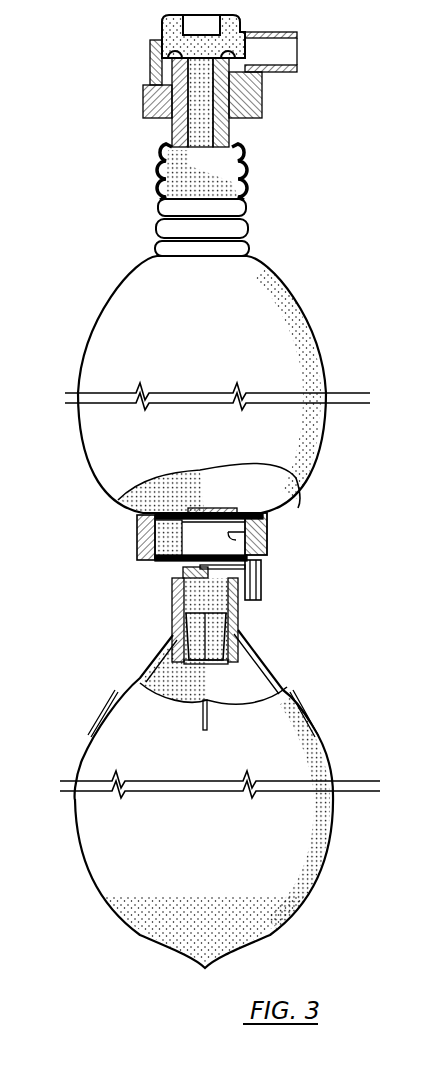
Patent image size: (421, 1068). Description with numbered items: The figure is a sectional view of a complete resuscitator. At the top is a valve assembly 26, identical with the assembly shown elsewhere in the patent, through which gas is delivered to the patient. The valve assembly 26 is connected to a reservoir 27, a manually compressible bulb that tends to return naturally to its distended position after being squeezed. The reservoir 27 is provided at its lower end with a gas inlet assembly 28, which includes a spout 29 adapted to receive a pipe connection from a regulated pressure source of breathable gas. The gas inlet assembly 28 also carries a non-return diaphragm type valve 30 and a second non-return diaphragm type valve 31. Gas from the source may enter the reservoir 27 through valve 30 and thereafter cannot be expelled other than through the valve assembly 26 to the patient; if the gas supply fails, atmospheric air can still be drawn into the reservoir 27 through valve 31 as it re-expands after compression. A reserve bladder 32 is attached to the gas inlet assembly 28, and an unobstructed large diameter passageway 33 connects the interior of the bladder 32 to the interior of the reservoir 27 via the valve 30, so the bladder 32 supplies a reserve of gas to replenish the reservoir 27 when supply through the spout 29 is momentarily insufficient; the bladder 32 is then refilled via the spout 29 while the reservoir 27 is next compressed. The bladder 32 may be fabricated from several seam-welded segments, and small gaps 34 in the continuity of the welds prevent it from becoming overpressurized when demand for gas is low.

The valve assembly 26 is at (126, 94).
The reservoir 27 is at (134, 316).
The gas inlet assembly 28 is at (124, 550).
The spout 29 is at (255, 585).
The non-return diaphragm type valve 30 is at (267, 529).
The non-return diaphragm type valve 31 is at (164, 578).
The reserve bladder 32 is at (109, 832).
The passageway 33 is at (205, 592).
The gaps 34 is at (205, 705).